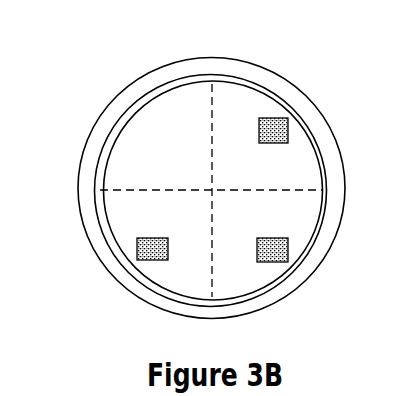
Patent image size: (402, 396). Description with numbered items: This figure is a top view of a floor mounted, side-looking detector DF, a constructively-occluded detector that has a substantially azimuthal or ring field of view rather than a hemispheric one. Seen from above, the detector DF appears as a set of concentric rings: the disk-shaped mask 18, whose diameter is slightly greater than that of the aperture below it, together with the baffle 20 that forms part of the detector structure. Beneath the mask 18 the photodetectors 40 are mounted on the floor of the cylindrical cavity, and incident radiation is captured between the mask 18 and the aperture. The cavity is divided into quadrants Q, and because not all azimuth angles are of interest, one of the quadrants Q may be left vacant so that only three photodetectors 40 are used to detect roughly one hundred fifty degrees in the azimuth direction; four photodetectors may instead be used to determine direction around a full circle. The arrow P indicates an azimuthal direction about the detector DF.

The mask 18 is at (108, 136).
The baffle 20 is at (211, 77).
The photodetectors 40 is at (259, 133).
The quadrants Q is at (155, 113).
The rotation direction P is at (362, 110).
The floor mounted side-looking detector DF is at (77, 268).